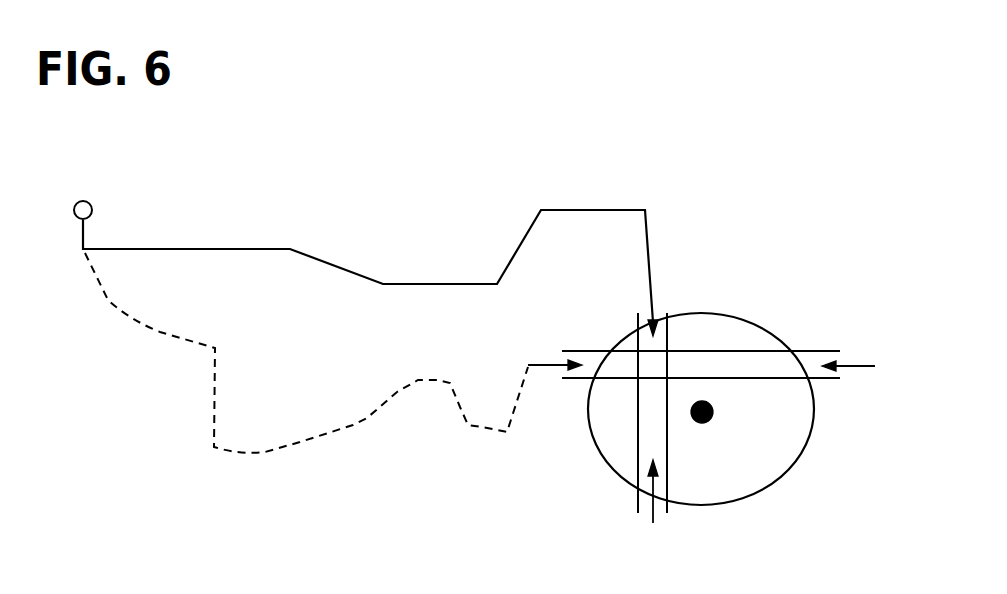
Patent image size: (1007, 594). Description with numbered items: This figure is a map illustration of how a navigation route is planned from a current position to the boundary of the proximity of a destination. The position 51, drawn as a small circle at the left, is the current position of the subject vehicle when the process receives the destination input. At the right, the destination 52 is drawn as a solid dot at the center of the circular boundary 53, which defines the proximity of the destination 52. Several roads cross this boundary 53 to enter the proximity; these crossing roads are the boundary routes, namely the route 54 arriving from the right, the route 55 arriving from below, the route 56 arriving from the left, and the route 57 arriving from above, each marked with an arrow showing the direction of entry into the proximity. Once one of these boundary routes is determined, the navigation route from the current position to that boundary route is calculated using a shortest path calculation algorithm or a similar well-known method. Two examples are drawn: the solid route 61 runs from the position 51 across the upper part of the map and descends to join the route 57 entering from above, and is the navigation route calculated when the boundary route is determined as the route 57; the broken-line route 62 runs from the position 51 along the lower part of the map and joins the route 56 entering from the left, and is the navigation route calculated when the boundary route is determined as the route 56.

The position 51 is at (92, 206).
The destination 52 is at (713, 410).
The circular boundary 53 is at (765, 332).
The route 54 is at (810, 362).
The route 55 is at (637, 498).
The route 56 is at (588, 360).
The route 57 is at (663, 340).
The route 61 is at (365, 278).
The route 62 is at (368, 418).